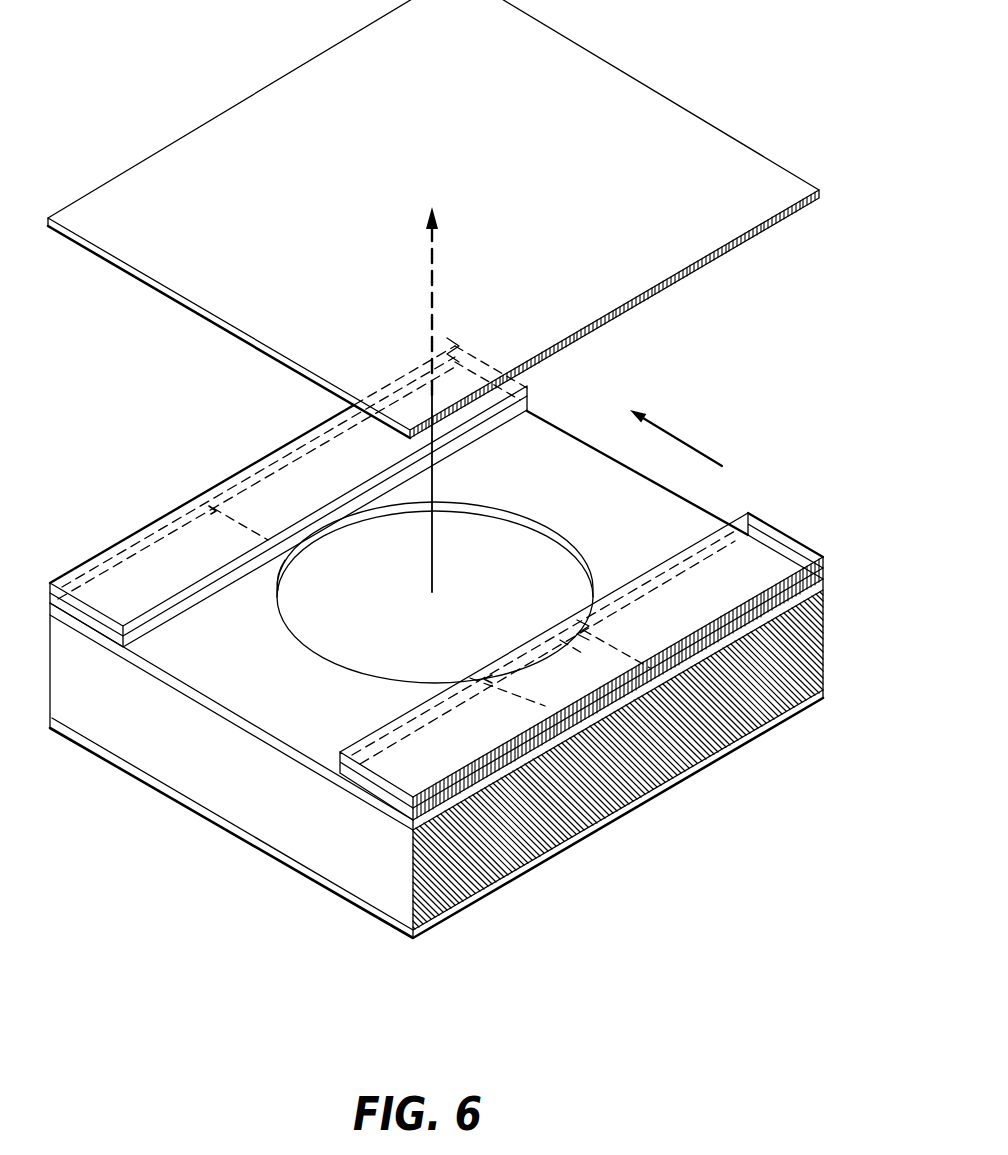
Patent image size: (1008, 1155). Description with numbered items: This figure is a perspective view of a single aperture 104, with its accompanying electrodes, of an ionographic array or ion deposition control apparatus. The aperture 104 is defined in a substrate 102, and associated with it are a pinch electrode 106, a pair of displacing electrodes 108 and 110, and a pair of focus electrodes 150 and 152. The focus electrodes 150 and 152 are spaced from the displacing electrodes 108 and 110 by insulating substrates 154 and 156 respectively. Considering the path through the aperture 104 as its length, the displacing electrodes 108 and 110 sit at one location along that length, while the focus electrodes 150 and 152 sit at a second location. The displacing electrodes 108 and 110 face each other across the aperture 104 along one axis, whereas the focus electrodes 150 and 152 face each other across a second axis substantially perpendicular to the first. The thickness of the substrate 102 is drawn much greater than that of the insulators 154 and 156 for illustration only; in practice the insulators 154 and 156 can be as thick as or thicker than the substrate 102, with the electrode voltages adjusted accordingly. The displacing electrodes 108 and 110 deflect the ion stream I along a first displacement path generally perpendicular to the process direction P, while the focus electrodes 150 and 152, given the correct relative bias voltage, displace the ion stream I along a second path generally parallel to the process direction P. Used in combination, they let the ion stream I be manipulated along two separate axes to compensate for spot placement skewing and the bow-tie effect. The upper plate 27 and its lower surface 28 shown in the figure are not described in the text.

The cover plate 27 is at (707, 148).
The lower surface of cover plate 28 is at (263, 352).
The substrate 102 is at (826, 645).
The aperture 104 is at (286, 623).
The pinch electrode 106 is at (826, 698).
The displacing electrode 108 is at (267, 705).
The displacing electrode 110 is at (555, 458).
The focus electrode 150 is at (132, 575).
The focus electrode 152 is at (642, 622).
The insulating substrate 154 is at (150, 632).
The insulating substrate 156 is at (824, 578).
The process direction P is at (690, 445).
The ion stream I is at (431, 537).